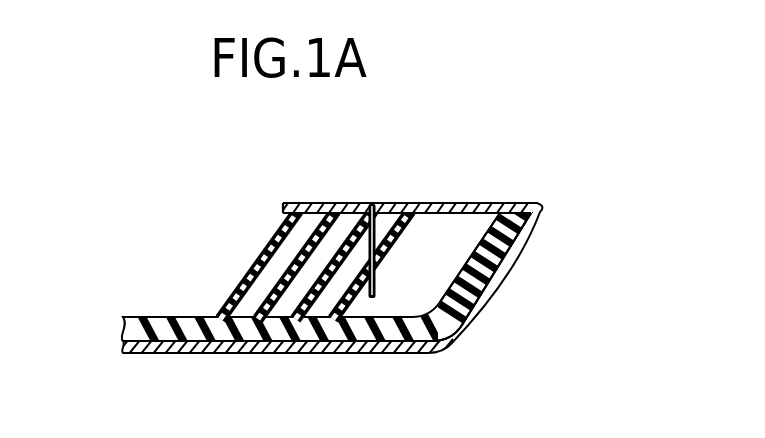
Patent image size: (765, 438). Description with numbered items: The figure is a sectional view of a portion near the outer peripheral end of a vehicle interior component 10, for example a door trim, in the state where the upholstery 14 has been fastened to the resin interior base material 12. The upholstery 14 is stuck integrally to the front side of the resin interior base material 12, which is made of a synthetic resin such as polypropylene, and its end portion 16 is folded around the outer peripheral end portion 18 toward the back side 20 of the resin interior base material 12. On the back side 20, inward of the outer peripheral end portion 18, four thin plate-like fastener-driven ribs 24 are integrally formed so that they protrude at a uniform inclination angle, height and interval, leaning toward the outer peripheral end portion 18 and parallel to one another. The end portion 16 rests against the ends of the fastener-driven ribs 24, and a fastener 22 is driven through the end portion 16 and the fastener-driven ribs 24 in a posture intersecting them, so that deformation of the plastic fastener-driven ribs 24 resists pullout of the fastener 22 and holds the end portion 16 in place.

The vehicle interior component 10 is at (503, 157).
The resin interior base material 12 is at (108, 311).
The upholstery 14 is at (277, 353).
The end portion 16 is at (416, 202).
The outer peripheral end portion 18 is at (489, 259).
The back side 20 is at (165, 316).
The fastener 22 is at (366, 213).
The fastener-driven rib 24 is at (242, 283).